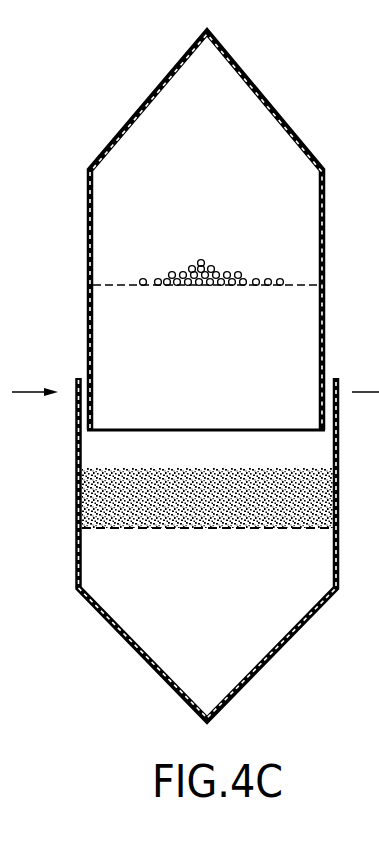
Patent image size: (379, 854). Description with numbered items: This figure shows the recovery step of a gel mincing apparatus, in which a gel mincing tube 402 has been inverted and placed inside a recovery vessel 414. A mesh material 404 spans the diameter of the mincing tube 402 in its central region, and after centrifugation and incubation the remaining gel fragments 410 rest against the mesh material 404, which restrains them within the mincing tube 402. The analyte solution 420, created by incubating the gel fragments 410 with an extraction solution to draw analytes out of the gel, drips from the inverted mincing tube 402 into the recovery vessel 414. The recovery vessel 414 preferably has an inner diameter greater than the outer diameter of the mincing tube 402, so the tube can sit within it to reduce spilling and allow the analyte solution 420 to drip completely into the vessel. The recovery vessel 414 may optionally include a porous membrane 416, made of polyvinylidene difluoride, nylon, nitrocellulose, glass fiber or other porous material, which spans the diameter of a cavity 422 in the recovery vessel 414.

The gel mincing tube 402 is at (87, 211).
The mesh material 404 is at (132, 288).
The gel fragments 410 is at (212, 261).
The recovery vessel 414 is at (123, 640).
The membrane 416 is at (138, 534).
The analyte solution 420 is at (226, 475).
The cavity 422 is at (232, 596).